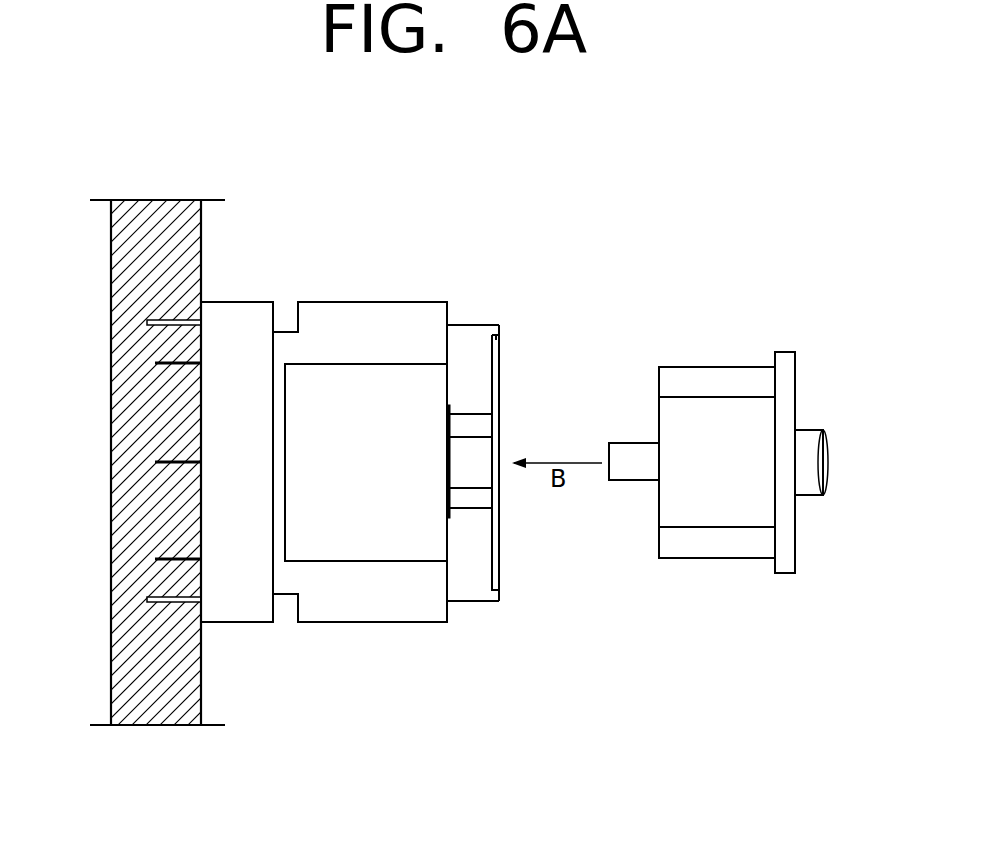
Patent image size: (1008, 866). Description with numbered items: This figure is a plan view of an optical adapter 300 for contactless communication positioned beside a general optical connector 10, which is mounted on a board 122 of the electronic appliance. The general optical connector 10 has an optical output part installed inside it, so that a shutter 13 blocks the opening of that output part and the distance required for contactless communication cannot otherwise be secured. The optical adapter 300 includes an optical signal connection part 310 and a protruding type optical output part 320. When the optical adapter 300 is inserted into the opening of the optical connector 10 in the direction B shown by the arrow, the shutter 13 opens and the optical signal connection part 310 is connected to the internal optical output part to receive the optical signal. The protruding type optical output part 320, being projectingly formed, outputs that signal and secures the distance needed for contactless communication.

The general optical connector 10 is at (368, 310).
The shutter 13 is at (497, 352).
The board 122 is at (118, 557).
The optical adapter for contactless communication 300 is at (729, 360).
The optical signal connection part 310 is at (637, 447).
The protruding type optical output part 320 is at (828, 479).